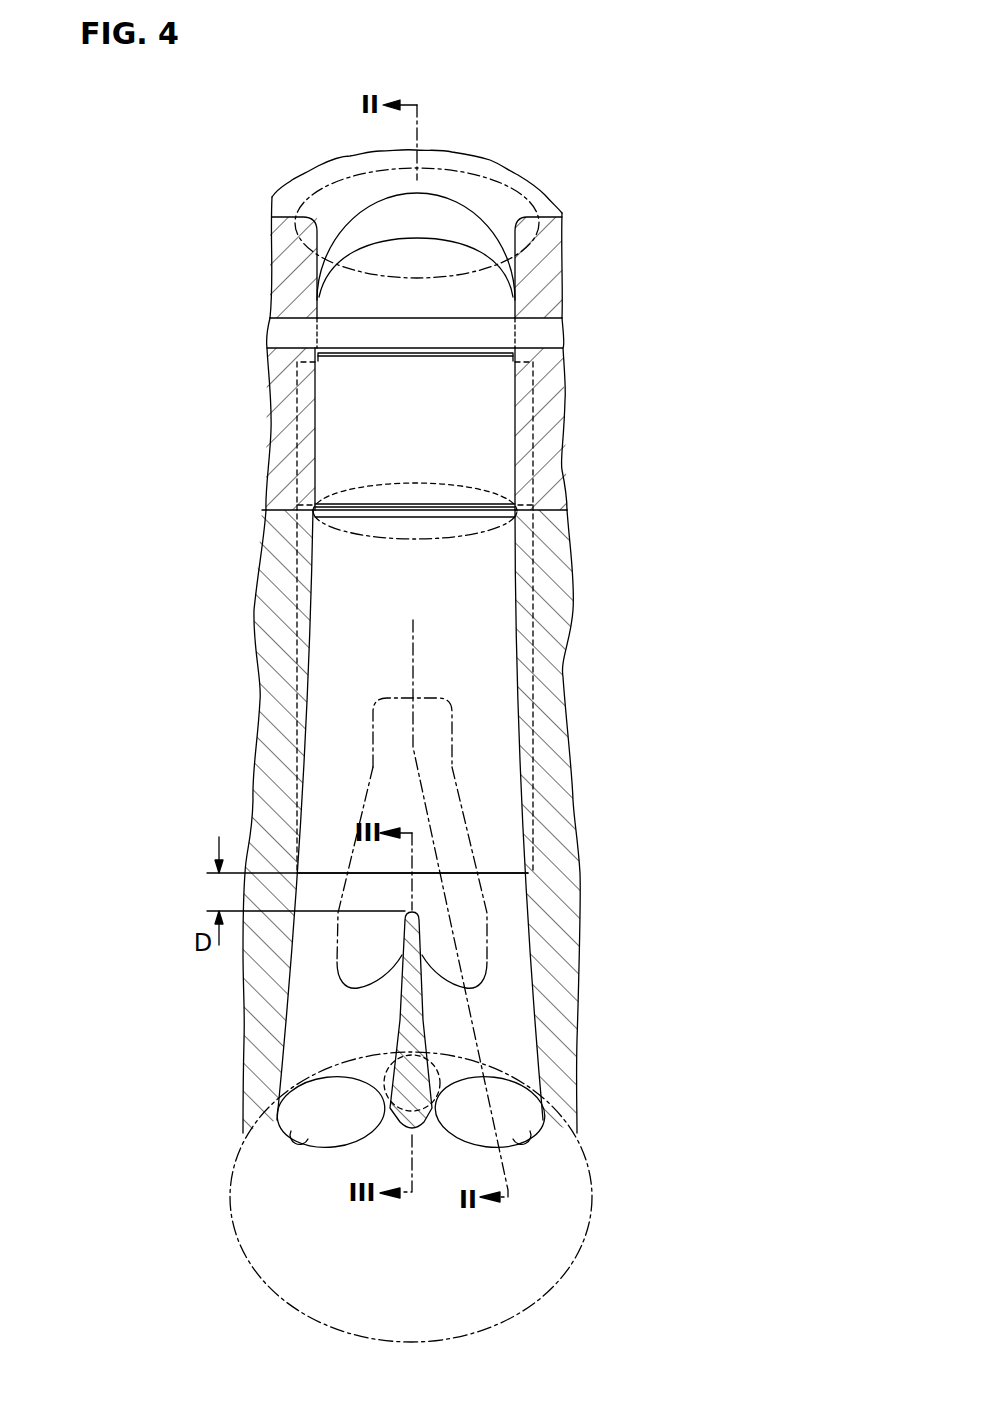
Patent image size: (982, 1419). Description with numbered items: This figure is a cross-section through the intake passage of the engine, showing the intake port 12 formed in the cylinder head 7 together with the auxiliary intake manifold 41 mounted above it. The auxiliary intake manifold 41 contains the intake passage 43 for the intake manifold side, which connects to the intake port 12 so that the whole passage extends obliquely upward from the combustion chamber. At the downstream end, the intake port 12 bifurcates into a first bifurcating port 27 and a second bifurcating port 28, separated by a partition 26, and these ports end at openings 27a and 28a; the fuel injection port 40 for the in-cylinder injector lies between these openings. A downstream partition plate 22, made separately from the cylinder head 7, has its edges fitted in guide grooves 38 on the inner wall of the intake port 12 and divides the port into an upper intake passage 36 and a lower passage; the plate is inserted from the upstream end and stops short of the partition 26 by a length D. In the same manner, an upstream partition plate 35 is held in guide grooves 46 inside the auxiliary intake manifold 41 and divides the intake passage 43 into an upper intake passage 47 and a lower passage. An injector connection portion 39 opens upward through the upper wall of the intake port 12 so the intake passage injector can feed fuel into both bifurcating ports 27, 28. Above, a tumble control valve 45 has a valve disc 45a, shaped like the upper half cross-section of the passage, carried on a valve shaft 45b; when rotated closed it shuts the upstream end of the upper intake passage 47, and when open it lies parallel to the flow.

The cylinder head 7 is at (545, 805).
The intake port 12 is at (513, 636).
The downstream partition plate 22 is at (483, 570).
The partition 26 is at (400, 1008).
The first bifurcating port 27 is at (284, 1045).
The opening 27a is at (287, 1137).
The second bifurcating port 28 is at (537, 1030).
The opening 28a is at (543, 1130).
The upstream partition plate 35 is at (498, 397).
The upper intake passage 36 is at (401, 600).
The guide grooves 38 is at (295, 673).
The injector connection portion 39 is at (484, 886).
The fuel injection port 40 is at (460, 1087).
The auxiliary intake manifold 41 is at (542, 448).
The intake passage for the intake manifold side 43 is at (482, 224).
The tumble control valve 45 is at (575, 319).
The valve disc 45a is at (335, 297).
The valve shaft 45b is at (287, 332).
The guide grooves 46 is at (295, 440).
The upper intake passage 47 is at (386, 415).